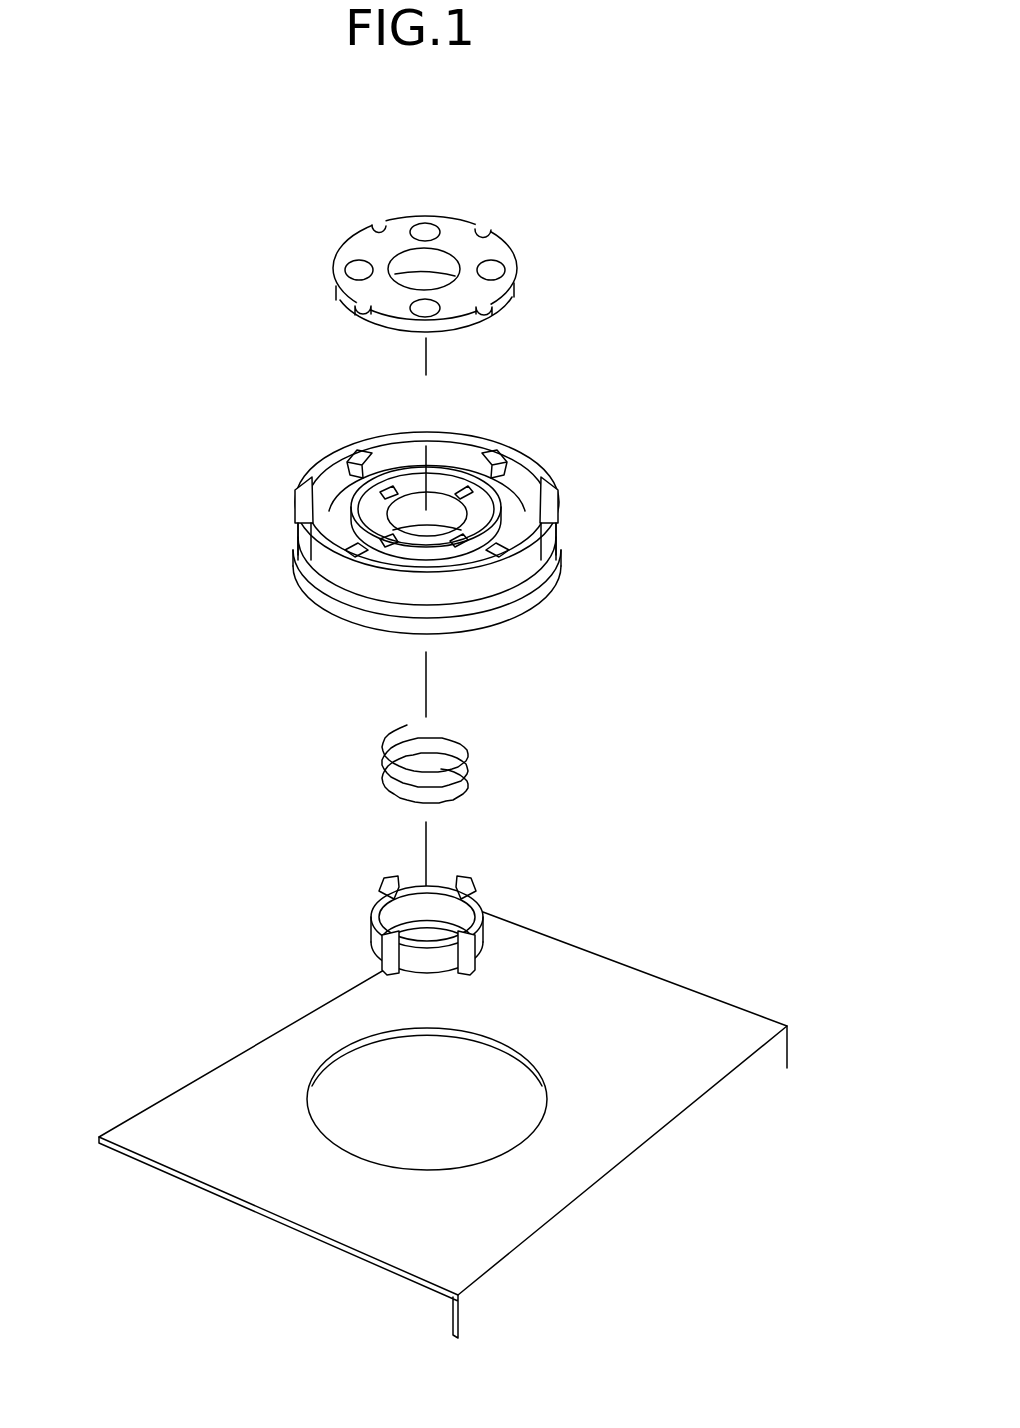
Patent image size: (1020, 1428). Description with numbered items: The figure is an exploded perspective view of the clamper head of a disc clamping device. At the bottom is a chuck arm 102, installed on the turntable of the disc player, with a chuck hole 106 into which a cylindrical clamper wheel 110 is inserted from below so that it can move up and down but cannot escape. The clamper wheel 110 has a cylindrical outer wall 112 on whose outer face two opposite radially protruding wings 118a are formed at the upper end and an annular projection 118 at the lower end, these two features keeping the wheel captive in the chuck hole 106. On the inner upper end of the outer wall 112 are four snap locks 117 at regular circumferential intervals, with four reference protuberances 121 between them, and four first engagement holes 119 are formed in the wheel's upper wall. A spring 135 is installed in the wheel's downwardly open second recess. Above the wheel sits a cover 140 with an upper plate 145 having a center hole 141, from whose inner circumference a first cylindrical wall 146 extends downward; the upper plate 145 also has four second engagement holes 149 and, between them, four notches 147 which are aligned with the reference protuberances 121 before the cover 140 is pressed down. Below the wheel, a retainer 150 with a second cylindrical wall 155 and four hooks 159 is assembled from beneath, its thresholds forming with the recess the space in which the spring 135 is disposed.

The chuck arm 102 is at (210, 1101).
The chuck hole 106 is at (438, 1103).
The clamper wheel 110 is at (401, 546).
The outer wall 112 is at (500, 575).
The snap locks 117 is at (493, 456).
The annular projection 118 is at (503, 620).
The wings 118a is at (302, 503).
The first engagement holes 119 is at (455, 530).
The reference protuberances 121 is at (415, 454).
The spring 135 is at (380, 762).
The cover 140 is at (394, 239).
The center hole 141 is at (416, 257).
The upper plate 145 is at (347, 292).
The first cylindrical wall 146 is at (422, 278).
The notches 147 is at (483, 232).
The second engagement holes 149 is at (492, 272).
The retainer 150 is at (426, 916).
The second cylindrical wall 155 is at (432, 967).
The hooks 159 is at (387, 938).